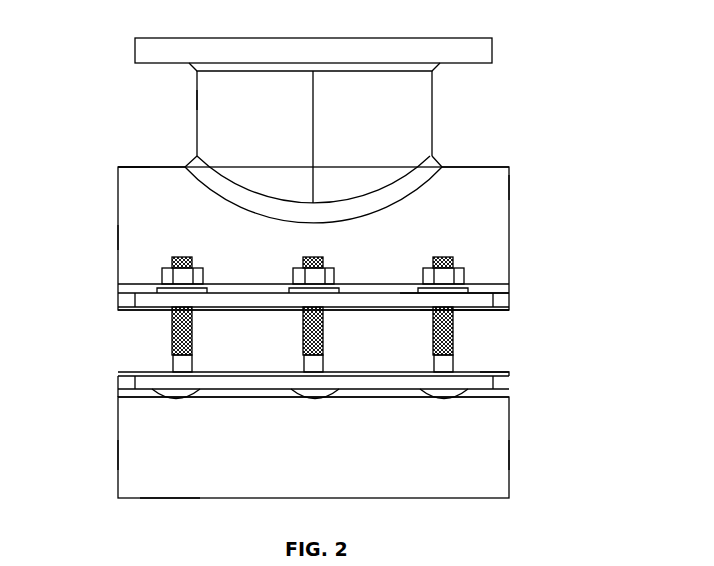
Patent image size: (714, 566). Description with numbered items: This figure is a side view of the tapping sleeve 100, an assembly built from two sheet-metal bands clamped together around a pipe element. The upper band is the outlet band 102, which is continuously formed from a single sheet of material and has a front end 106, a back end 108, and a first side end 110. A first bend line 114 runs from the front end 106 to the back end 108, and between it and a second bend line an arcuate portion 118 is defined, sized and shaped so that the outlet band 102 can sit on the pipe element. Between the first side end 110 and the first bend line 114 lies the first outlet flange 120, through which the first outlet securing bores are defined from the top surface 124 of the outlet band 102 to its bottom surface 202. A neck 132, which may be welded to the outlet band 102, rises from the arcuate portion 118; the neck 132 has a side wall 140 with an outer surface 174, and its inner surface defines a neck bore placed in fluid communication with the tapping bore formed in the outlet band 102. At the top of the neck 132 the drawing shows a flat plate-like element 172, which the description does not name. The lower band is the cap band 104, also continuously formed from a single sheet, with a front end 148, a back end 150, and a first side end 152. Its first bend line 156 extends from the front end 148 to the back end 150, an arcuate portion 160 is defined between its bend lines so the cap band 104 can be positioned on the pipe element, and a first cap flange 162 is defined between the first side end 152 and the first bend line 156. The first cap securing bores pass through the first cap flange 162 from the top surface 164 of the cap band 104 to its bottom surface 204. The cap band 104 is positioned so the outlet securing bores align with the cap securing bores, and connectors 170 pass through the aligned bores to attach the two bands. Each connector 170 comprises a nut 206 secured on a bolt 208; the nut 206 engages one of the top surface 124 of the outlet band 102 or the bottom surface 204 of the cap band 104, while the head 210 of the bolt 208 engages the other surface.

The tapping sleeve 100 is at (92, 34).
The top plate 172 is at (432, 38).
The neck 132 is at (418, 112).
The side wall 140 is at (200, 99).
The outer surface 174 is at (200, 148).
The outlet band 102 is at (460, 167).
The front end 106 is at (509, 232).
The arcuate portion 118 is at (511, 186).
The top surface 124 is at (133, 167).
The back end 108 is at (118, 237).
The first outlet flange 120 is at (153, 298).
The first side end 110 is at (473, 298).
The bottom surface 202 is at (497, 310).
The first bend line 114 is at (486, 311).
The nut 206 is at (182, 271).
The connectors 170 is at (193, 330).
The top surface 164 is at (157, 372).
The first bend line 156 is at (480, 372).
The head 210 is at (145, 392).
The first cap flange 162 is at (118, 392).
The first side end 152 is at (482, 390).
The bolt 208 is at (181, 398).
The cap band 104 is at (505, 481).
The bottom surface 204 is at (497, 438).
The front end 148 is at (509, 452).
The back end 150 is at (118, 455).
The arcuate portion 160 is at (173, 498).